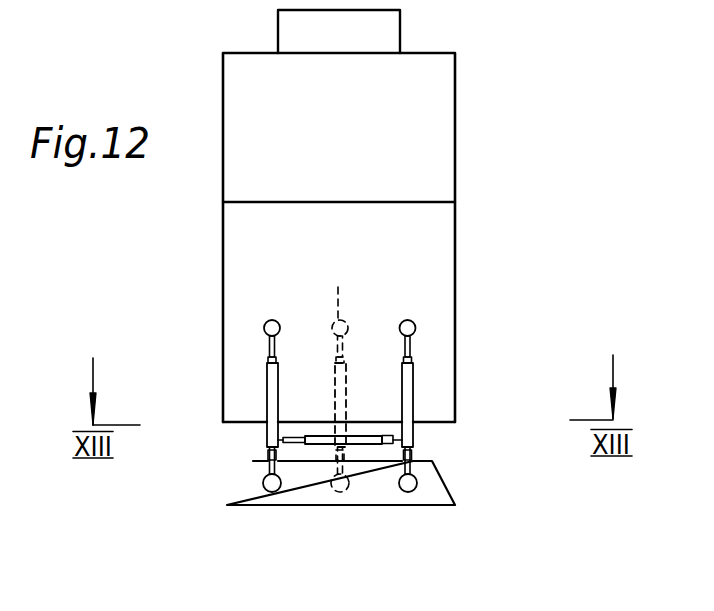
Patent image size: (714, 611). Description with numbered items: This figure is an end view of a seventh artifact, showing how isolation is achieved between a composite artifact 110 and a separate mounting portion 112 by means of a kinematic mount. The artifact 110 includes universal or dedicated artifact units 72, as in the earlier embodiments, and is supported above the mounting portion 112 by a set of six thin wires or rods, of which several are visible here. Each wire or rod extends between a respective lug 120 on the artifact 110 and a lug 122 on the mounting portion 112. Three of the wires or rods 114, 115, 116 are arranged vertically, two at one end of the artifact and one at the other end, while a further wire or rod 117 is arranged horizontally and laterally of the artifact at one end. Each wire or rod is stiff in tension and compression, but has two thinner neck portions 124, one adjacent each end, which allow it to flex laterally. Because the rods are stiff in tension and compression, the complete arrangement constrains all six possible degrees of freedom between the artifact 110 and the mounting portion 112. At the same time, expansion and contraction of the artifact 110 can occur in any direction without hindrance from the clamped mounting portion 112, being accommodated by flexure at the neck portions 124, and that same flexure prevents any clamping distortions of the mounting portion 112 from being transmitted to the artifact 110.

The artifact unit 72 is at (457, 128).
The composite artifact 110 is at (462, 237).
The mounting portion 112 is at (418, 487).
The wire or rod 114 is at (270, 406).
The wire or rod 115 is at (413, 386).
The wire or rod 116 is at (335, 384).
The wire or rod 117 is at (368, 446).
The lug 120 is at (397, 324).
The lug 122 is at (340, 492).
The neck portion 124 is at (268, 357).